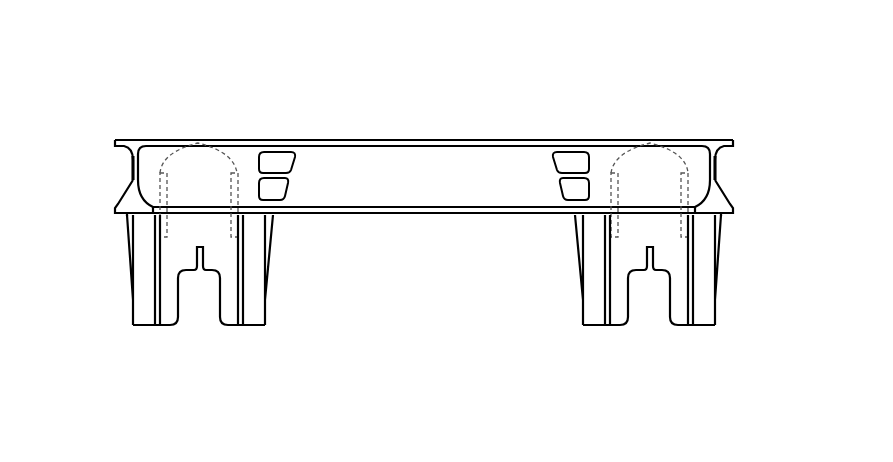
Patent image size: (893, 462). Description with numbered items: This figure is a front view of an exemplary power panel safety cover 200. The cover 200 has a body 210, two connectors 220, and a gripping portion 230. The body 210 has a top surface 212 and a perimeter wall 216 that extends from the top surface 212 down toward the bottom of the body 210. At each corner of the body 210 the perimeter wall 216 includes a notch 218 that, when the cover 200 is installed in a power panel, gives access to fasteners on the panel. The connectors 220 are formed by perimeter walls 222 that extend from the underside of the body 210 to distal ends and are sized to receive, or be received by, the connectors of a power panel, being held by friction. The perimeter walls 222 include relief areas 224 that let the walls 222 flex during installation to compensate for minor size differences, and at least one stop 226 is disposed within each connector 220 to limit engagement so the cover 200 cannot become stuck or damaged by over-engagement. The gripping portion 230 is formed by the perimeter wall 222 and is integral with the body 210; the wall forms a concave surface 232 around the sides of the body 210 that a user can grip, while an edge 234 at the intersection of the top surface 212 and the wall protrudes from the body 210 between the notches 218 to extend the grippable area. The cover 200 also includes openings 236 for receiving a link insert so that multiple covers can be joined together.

The power panel safety cover 200 is at (687, 68).
The body 210 is at (350, 112).
The top surface 212 is at (427, 140).
The perimeter wall 216 is at (497, 150).
The notches 218 is at (133, 142).
The connectors 220 is at (117, 338).
The perimeter walls 222 is at (228, 268).
The relief areas 224 is at (427, 215).
The stop 226 is at (198, 143).
The gripping portion 230 is at (728, 175).
The concave surface 232 is at (130, 190).
The edge 234 is at (132, 155).
The openings 236 is at (298, 180).